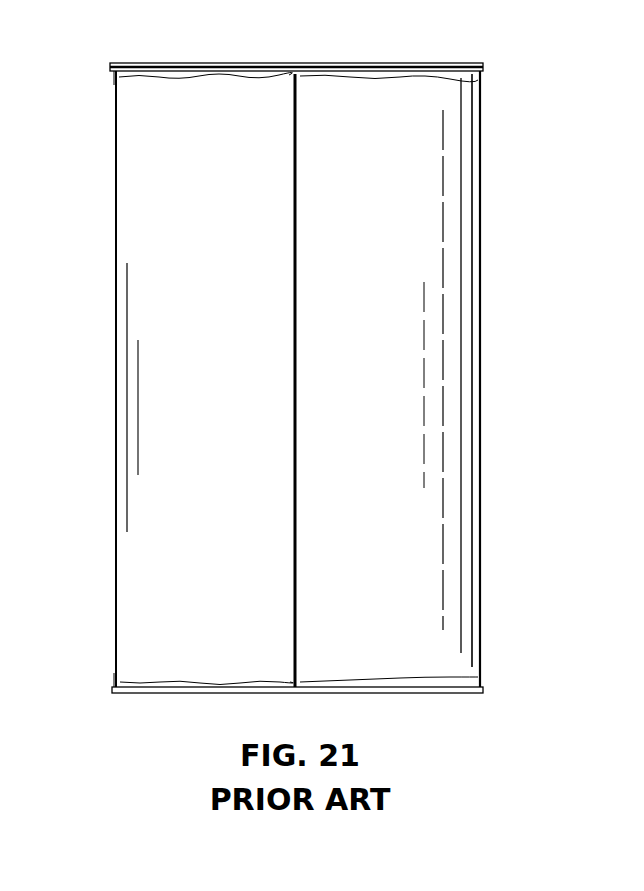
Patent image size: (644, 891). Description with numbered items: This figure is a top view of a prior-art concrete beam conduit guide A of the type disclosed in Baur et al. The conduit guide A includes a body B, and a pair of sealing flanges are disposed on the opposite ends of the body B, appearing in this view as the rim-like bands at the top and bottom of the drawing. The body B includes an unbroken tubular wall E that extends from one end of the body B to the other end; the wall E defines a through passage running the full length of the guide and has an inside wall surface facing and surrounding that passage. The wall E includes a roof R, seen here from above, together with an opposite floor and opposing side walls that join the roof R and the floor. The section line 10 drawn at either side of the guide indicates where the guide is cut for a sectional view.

The container (can) A is at (313, 367).
The body of container B is at (482, 273).
The side seam E is at (170, 222).
The rib / bead region R is at (423, 568).
The section line 10- 10 is at (53, 456).